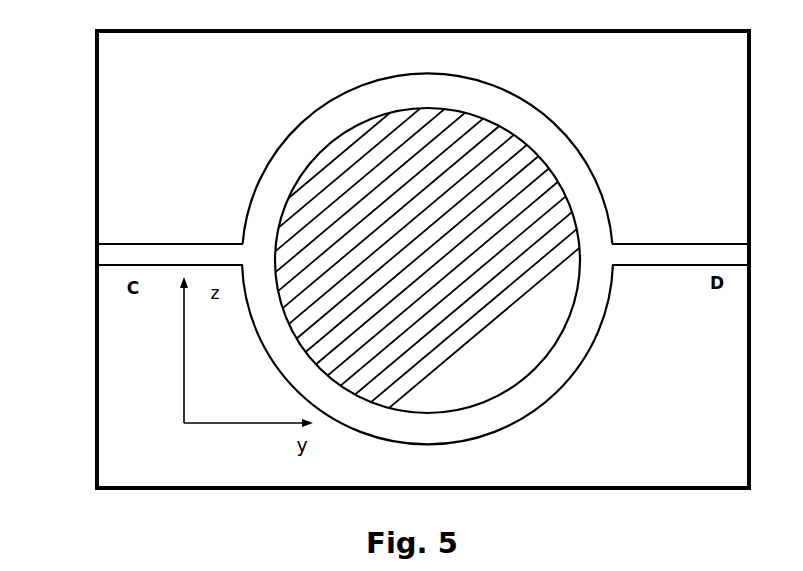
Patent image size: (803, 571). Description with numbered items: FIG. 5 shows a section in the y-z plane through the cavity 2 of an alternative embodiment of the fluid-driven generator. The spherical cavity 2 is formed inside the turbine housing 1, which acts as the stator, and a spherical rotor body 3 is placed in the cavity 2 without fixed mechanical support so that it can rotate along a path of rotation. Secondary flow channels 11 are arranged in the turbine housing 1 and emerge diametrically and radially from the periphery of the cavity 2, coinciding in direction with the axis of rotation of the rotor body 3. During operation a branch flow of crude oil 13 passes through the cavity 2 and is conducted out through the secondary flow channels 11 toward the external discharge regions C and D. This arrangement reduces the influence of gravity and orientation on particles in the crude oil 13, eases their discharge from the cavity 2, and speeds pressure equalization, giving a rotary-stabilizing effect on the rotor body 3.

The turbine housing 1 is at (154, 86).
The cavity 2 is at (535, 133).
The rotor body 3 is at (507, 360).
The secondary flow channels 11 is at (133, 253).
The crude oil 13 is at (416, 97).